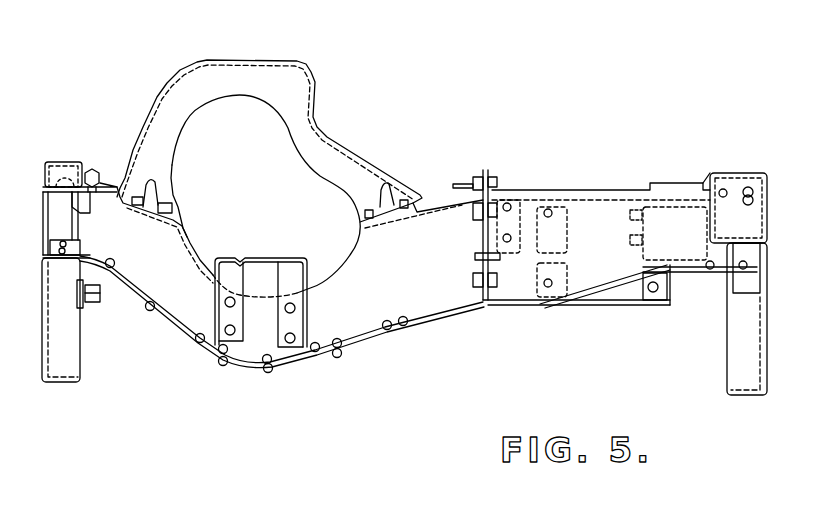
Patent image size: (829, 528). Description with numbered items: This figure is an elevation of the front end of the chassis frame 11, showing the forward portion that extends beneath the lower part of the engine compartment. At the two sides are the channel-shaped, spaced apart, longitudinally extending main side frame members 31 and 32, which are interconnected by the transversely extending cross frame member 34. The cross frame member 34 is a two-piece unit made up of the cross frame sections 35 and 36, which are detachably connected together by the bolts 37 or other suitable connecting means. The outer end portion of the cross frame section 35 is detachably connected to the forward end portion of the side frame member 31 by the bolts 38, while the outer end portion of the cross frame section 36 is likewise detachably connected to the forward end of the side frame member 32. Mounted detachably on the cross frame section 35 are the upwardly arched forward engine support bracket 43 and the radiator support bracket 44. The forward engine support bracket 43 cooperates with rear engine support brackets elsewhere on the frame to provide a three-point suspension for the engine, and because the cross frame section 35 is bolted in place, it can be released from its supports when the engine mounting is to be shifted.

The chassis frame 11 is at (97, 320).
The main side frame member 31 is at (70, 363).
The main side frame member 32 is at (743, 360).
The cross frame member 34 is at (532, 184).
The cross frame section 35 is at (187, 307).
The cross frame section 36 is at (593, 270).
The bolts 37 is at (470, 277).
The bolts 38 is at (90, 168).
The forward engine support bracket 43 is at (300, 80).
The radiator support bracket 44 is at (297, 302).